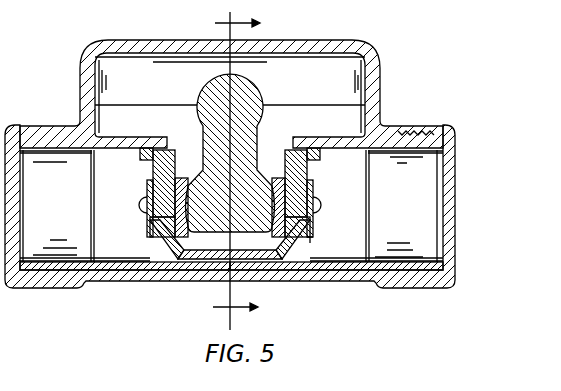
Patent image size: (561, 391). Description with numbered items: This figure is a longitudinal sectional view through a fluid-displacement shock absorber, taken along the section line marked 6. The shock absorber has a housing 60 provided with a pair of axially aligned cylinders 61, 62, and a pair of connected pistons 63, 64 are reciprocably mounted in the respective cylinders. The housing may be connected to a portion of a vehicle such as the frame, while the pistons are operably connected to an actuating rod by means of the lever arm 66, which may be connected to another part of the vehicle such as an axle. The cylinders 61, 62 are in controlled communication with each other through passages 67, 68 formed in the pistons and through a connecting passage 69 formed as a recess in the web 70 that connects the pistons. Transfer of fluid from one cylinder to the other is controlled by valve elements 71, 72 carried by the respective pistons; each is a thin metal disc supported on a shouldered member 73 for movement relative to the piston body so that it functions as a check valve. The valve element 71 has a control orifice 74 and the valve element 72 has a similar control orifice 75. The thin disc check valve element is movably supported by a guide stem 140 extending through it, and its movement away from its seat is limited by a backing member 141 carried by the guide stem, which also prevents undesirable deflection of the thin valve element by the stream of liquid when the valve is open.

The section line 6- 6 is at (243, 171).
The housing 60 is at (378, 118).
The cylinder 61 is at (82, 260).
The cylinder 62 is at (383, 257).
The piston 63 is at (118, 262).
The piston 64 is at (338, 260).
The lever arm 66 is at (254, 166).
The passage 67 is at (178, 263).
The passage 68 is at (302, 258).
The connecting passage 69 is at (215, 262).
The web 70 is at (272, 265).
The valve element 71 is at (150, 175).
The valve element 72 is at (312, 177).
The shouldered member 73 is at (157, 197).
The control orifice 74 is at (148, 240).
The control orifice 75 is at (318, 238).
The guide stem 140 is at (325, 208).
The backing member 141 is at (322, 190).